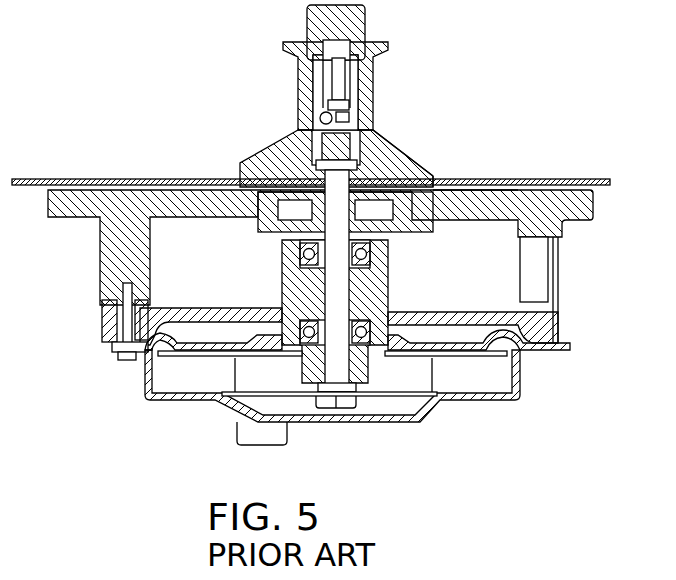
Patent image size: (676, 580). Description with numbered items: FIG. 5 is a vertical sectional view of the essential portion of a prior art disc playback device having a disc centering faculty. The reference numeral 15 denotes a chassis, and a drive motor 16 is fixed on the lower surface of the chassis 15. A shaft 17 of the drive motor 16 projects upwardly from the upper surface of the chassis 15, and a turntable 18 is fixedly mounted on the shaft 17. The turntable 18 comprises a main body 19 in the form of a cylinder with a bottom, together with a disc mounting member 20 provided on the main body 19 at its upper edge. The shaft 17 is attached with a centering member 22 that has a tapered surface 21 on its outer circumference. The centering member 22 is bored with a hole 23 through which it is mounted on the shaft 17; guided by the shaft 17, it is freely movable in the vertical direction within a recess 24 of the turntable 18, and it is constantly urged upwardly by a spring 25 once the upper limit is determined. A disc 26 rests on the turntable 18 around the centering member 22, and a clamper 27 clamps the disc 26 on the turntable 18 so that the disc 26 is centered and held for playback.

The chassis 15 is at (548, 212).
The drive motor 16 is at (197, 393).
The shaft 17 is at (338, 150).
The turntable 18 is at (432, 241).
The main body 19 is at (390, 230).
The disc mounting member 20 is at (462, 182).
The tapered surface 21 is at (430, 180).
The centering member 22 is at (390, 170).
The hole 23 is at (310, 157).
The recess 24 is at (265, 175).
The spring 25 is at (300, 207).
The disc 26 is at (603, 183).
The clamper 27 is at (367, 110).